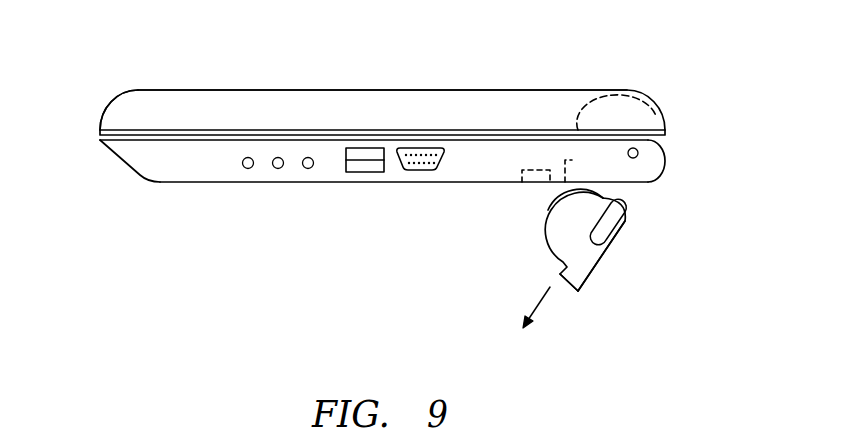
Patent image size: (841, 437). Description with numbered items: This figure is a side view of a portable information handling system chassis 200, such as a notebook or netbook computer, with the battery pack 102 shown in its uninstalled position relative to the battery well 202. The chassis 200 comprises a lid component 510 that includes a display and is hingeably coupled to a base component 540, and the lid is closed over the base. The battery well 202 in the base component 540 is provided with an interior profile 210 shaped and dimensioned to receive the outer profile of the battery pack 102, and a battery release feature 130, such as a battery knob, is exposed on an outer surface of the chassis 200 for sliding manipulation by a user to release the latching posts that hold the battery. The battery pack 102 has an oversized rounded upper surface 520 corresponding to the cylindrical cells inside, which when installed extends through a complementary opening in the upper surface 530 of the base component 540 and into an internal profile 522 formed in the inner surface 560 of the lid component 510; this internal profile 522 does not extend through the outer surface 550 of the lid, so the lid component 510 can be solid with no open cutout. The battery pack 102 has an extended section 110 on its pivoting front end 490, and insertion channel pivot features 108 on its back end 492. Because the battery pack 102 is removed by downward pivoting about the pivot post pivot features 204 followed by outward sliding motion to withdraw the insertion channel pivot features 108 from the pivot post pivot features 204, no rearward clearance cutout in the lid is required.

The battery pack 102 is at (588, 258).
The insertion channel pivot features 108 is at (606, 219).
The extended section 110 is at (575, 278).
The battery release feature 130 is at (540, 182).
The portable information handling system chassis 200 is at (125, 165).
The battery well 202 is at (657, 170).
The pivot post pivot features 204 is at (638, 152).
The interior profile 210 is at (578, 157).
The front end 490 is at (564, 292).
The back end 492 is at (603, 199).
The lid component 510 is at (247, 108).
The rounded upper surface 520 is at (543, 222).
The internal profile 522 is at (618, 102).
The upper surface 530 is at (364, 140).
The base component 540 is at (180, 170).
The outer surface 550 is at (203, 88).
The inner surface 560 is at (137, 127).